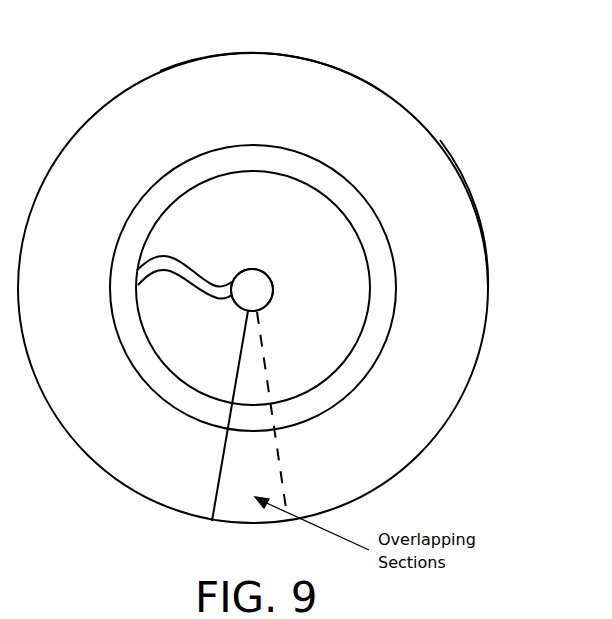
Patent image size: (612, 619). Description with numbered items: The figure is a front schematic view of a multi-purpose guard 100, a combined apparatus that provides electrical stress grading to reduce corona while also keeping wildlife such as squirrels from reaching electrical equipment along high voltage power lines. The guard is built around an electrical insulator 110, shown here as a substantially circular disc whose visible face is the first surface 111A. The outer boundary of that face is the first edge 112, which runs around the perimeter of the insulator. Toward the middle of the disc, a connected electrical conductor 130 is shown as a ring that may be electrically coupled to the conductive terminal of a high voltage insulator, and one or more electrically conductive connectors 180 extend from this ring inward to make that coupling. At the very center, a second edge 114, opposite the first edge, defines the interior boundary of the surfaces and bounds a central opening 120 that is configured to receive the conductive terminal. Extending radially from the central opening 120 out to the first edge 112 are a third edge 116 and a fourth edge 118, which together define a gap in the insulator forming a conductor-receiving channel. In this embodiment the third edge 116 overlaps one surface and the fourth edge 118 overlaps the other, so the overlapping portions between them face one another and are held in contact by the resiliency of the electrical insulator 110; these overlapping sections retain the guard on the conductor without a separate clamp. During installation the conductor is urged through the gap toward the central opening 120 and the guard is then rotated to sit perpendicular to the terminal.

The multi-purpose guard 100 is at (478, 124).
The electrical insulator 110 is at (235, 65).
The first surface 111A is at (334, 83).
The first edge 112 is at (476, 212).
The connected electrical conductor 130 is at (366, 237).
The second edge 114 is at (260, 266).
The central opening 120 is at (260, 287).
The electrically conductive connector 180 is at (170, 272).
The fourth edge 118 is at (223, 447).
The third edge 116 is at (275, 443).